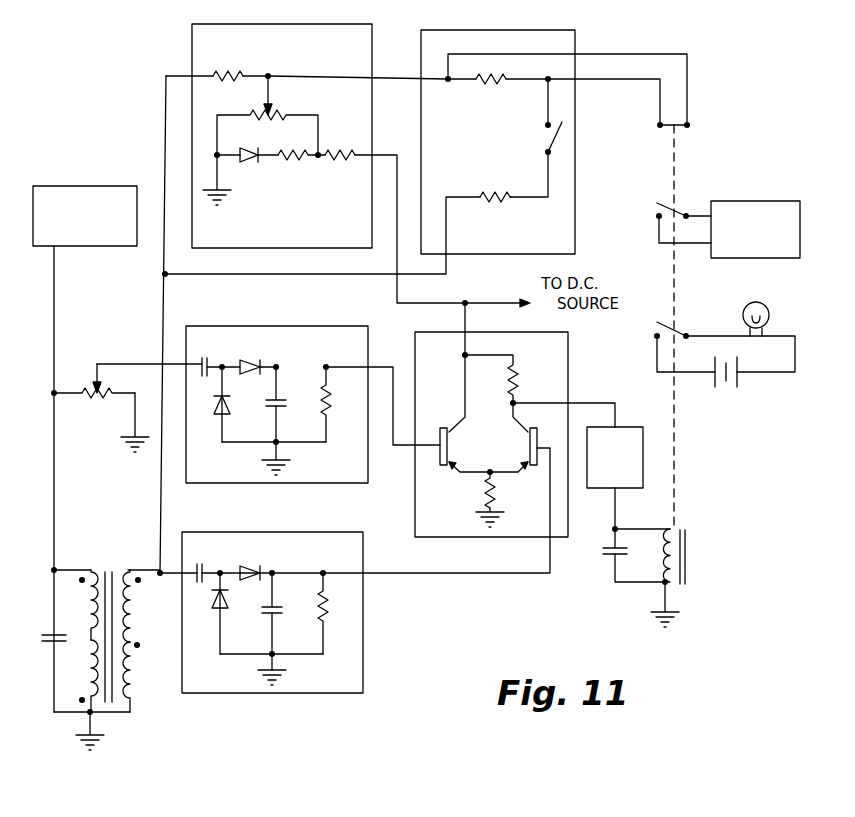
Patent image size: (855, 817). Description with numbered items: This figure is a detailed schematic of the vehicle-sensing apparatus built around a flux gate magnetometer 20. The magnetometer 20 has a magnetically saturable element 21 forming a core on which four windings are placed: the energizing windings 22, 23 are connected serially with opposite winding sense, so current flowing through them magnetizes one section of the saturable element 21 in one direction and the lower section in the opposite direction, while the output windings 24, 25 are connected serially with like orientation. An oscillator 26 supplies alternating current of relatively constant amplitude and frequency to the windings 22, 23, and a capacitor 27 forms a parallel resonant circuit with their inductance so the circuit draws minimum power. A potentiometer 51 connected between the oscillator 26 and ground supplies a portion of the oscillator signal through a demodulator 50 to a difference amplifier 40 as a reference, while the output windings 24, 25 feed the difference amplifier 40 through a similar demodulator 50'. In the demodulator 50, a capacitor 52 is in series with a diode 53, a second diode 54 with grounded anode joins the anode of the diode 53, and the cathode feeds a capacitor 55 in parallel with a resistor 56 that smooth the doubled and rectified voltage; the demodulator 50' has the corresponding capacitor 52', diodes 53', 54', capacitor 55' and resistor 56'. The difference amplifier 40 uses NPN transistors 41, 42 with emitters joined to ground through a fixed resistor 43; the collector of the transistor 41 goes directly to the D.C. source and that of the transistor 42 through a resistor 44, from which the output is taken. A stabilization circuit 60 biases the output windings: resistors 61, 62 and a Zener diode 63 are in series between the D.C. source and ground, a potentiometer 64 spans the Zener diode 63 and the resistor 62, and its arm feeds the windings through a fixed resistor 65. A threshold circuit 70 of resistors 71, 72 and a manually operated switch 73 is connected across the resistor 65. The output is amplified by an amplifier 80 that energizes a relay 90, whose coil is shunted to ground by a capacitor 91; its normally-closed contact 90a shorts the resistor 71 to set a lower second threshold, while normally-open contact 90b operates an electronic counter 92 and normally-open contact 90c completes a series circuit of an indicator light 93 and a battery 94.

The magnetometer 20 is at (120, 638).
The magnetically saturable element 21 is at (112, 571).
The energizing winding 22 is at (90, 608).
The energizing winding 23 is at (90, 680).
The output winding 24 is at (133, 610).
The output winding 25 is at (165, 722).
The oscillator 26 is at (106, 187).
The capacitor 27 is at (46, 634).
The difference amplifier 40 is at (491, 423).
The NPN transistor 41 is at (462, 447).
The NPN transistor 42 is at (515, 448).
The fixed resistor 43 is at (486, 500).
The resistor 44 is at (519, 380).
The demodulator 50 is at (277, 392).
The demodulator 50' is at (273, 598).
The potentiometer 51 is at (104, 390).
The capacitor 52 is at (213, 353).
The capacitor 52' is at (212, 558).
The diode 53 is at (249, 352).
The diode 53' is at (261, 557).
The diode 54 is at (211, 404).
The diode 54' is at (208, 613).
The capacitor 55 is at (274, 404).
The capacitor 55' is at (271, 613).
The resistor 56 is at (341, 404).
The resistor 56' is at (340, 613).
The stabilization circuit 60 is at (282, 125).
The resistor 61 is at (356, 158).
The resistor 62 is at (301, 168).
The Zener diode 63 is at (241, 160).
The potentiometer 64 is at (278, 112).
The fixed resistor 65 is at (232, 70).
The threshold circuit 70 is at (498, 129).
The resistor 71 is at (500, 84).
The resistor 72 is at (484, 193).
The manually operated switch 73 is at (541, 138).
The amplifier 80 is at (630, 427).
The relay 90 is at (702, 570).
The normally-closed contact 90a is at (660, 127).
The normally-open contact 90b is at (662, 221).
The normally-open contact 90c is at (706, 344).
The capacitor 91 is at (606, 552).
The electronic counter 92 is at (765, 201).
The indicator light 93 is at (766, 307).
The battery 94 is at (740, 380).